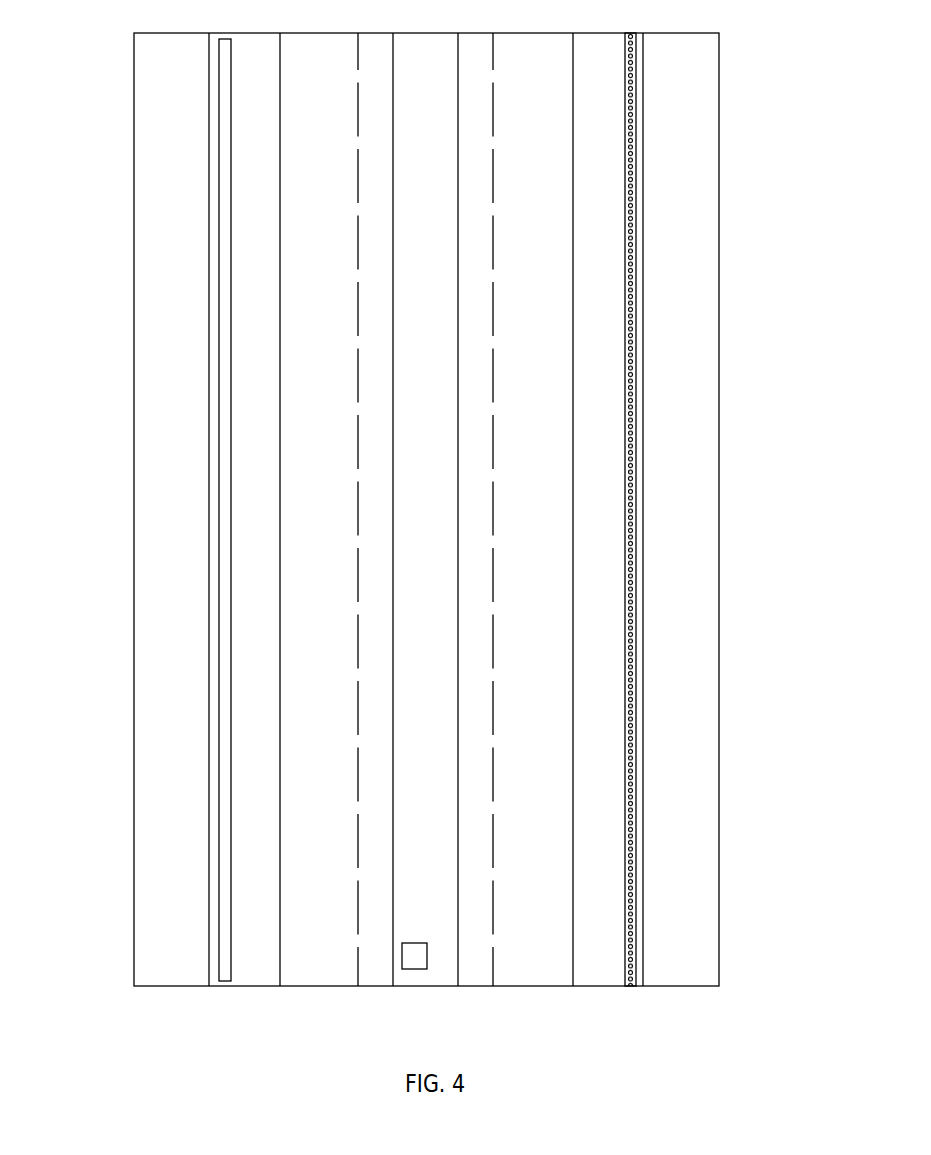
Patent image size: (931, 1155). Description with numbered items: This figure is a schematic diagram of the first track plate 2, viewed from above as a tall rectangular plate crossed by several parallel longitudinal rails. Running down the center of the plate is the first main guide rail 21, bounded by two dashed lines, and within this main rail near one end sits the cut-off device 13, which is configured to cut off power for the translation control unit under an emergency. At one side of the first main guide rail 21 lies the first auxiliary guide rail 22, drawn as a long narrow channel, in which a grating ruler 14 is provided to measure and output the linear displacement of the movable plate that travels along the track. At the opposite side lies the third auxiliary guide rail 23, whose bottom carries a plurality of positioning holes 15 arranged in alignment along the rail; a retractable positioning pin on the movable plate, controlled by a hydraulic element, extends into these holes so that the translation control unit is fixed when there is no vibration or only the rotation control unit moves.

The first track plate 2 is at (172, 765).
The cut-off device 13 is at (418, 965).
The grating ruler 14 is at (225, 512).
The positioning holes 15 is at (636, 515).
The first main guide rail 21 is at (428, 281).
The first auxiliary guide rail 22 is at (240, 77).
The third auxiliary guide rail 23 is at (615, 747).